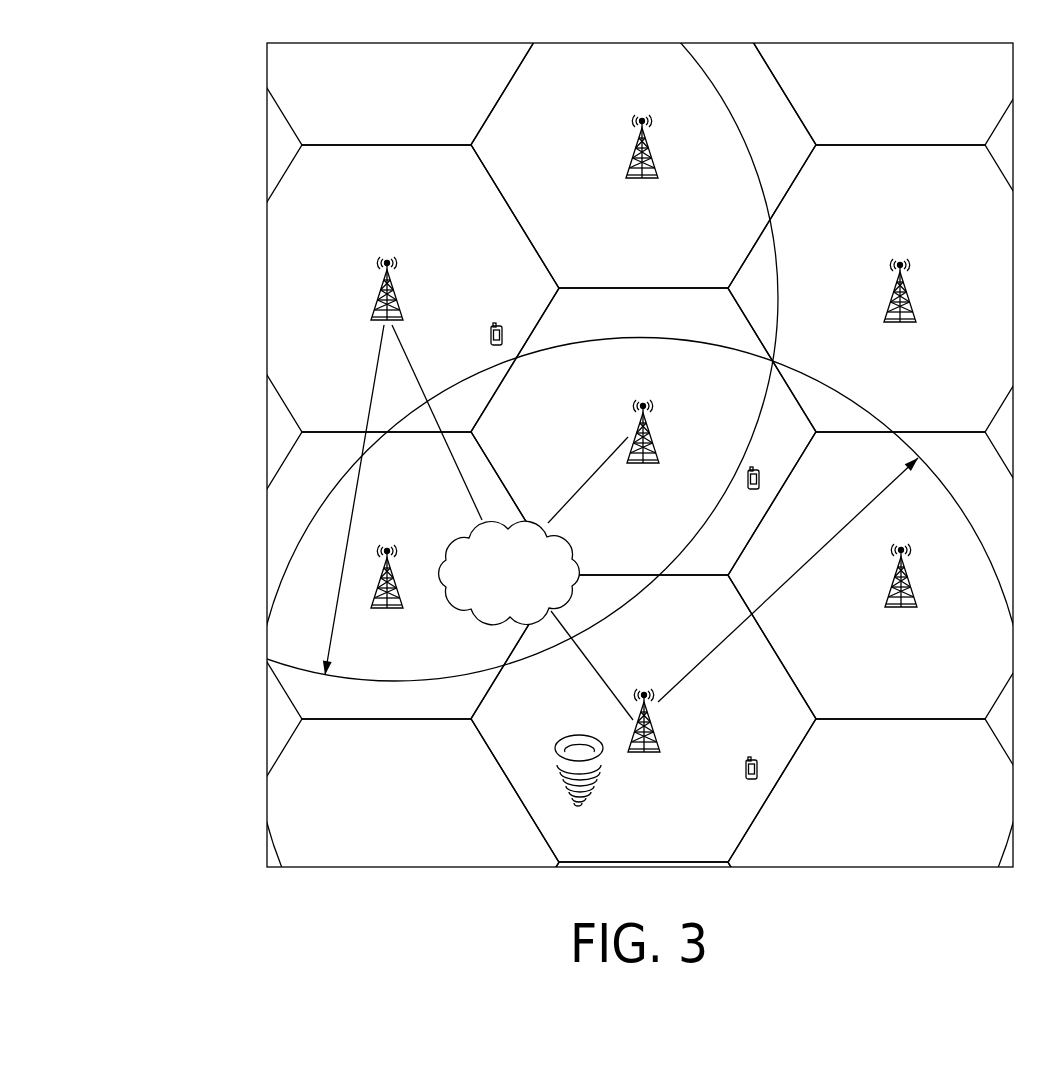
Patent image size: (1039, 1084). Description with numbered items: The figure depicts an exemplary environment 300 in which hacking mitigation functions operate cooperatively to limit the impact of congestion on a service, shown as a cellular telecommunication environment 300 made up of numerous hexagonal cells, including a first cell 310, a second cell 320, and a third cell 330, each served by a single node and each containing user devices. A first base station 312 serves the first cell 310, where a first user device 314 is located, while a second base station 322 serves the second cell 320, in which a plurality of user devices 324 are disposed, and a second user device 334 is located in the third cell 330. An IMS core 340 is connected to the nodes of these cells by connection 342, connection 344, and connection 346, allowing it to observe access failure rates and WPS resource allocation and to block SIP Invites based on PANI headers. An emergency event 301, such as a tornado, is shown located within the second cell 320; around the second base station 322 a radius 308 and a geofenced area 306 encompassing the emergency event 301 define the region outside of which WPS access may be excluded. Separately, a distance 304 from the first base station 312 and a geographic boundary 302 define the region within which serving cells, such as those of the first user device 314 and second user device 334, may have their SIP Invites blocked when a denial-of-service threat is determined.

The environment 300 is at (100, 108).
The emergency event 301 is at (545, 727).
The geographic boundary 302 is at (372, 683).
The distance 304 is at (356, 495).
The geofenced area 306 is at (850, 394).
The radius 308 is at (789, 584).
The first cell 310 is at (408, 185).
The first base station 312 is at (403, 283).
The first user device 314 is at (488, 336).
The second cell 320 is at (664, 851).
The second base station 322 is at (666, 714).
The user devices 324 is at (745, 771).
The third cell 330 is at (672, 323).
The second user device 334 is at (745, 481).
The IMS core 340 is at (453, 607).
The connection 342 is at (468, 474).
The connection 344 is at (593, 667).
The connection 346 is at (585, 490).